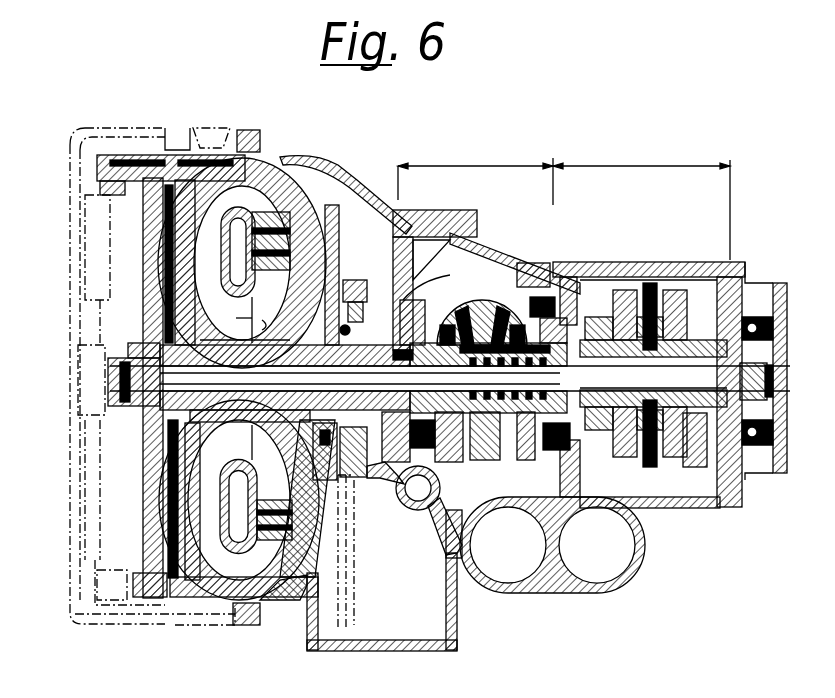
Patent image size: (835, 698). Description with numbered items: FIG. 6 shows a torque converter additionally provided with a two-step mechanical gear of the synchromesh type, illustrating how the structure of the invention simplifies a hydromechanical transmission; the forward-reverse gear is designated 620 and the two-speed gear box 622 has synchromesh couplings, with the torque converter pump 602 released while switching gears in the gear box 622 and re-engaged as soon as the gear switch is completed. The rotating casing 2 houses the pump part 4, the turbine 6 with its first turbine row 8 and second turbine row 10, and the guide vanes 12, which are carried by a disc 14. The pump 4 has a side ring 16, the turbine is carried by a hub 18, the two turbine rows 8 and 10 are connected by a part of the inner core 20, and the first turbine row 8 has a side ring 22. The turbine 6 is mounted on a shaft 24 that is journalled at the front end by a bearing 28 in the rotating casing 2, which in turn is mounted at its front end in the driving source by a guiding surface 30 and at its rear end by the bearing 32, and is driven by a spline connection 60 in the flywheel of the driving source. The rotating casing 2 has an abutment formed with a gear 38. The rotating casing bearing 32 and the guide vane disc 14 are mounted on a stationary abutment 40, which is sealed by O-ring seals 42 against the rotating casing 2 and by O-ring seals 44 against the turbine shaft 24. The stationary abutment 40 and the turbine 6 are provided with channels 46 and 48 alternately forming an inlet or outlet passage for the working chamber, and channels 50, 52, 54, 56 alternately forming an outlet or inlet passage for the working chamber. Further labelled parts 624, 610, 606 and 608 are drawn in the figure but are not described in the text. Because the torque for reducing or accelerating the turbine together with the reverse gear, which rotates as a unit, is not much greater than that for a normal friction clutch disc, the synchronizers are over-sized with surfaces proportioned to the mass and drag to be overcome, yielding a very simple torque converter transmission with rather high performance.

The rotating casing 2 is at (280, 160).
The guide vanes 12 is at (313, 200).
The first turbine row 8 is at (272, 206).
The side ring 16 is at (248, 210).
The pump part 4 is at (205, 245).
The turbine 6 is at (260, 298).
The inner core 20 is at (197, 262).
The second turbine row 10 is at (247, 310).
The channel 48 is at (262, 320).
The spline connection 60 is at (140, 196).
The bearing 28 is at (145, 345).
The disc 14 is at (338, 283).
The O-ring seals 42 is at (353, 280).
The stationary abutment 40 is at (381, 300).
The channel 50 is at (405, 292).
The O-ring seals 44 is at (420, 330).
The forward-reverse gear 620 is at (475, 175).
The two-speed gear box 622 is at (670, 326).
The channel 56 is at (141, 382).
The shaft 24 is at (269, 366).
The channel 54 is at (246, 389).
The shaft housing lower 624 is at (285, 390).
The channel 52 is at (366, 380).
The guiding surface 30 is at (105, 410).
The hub 18 is at (257, 439).
The bearing 32 is at (282, 456).
The lower chain loop 610 is at (226, 469).
The lower inner wall 606 is at (175, 538).
The bottom flange 608 is at (170, 580).
The torque converter pump 602 is at (213, 598).
The side ring 22 is at (292, 592).
The gear 38 is at (357, 488).
The channel 46 is at (380, 495).